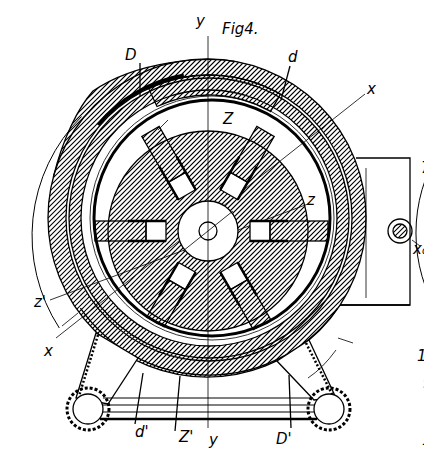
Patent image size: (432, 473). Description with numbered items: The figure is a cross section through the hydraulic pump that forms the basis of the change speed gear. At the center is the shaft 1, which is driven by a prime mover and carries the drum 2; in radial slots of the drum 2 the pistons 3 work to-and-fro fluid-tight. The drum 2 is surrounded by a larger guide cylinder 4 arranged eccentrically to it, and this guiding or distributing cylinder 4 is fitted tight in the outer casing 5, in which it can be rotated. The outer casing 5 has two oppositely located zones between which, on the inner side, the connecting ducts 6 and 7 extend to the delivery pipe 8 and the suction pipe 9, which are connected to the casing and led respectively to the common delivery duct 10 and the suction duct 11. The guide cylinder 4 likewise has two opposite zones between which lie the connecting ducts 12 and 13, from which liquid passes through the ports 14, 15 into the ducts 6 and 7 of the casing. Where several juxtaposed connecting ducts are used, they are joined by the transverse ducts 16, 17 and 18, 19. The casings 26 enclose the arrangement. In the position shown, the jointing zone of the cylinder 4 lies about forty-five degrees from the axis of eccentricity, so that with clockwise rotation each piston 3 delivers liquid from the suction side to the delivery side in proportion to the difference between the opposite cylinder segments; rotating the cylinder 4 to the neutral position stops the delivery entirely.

The shaft 1 is at (207, 215).
The drum 2 is at (272, 133).
The piston 3 is at (272, 120).
The guide cylinder 4 is at (322, 134).
The outer casing 5 is at (228, 72).
The connecting duct 6 is at (305, 95).
The connecting duct 7 is at (100, 107).
The delivery pipe 8 is at (305, 372).
The suction pipe 9 is at (97, 373).
The delivery duct 10 is at (338, 402).
The suction duct 11 is at (80, 405).
The connecting duct 12 is at (372, 302).
The connecting duct 13 is at (67, 152).
The port 14 is at (232, 370).
The port 15 is at (148, 92).
The transverse duct 16 is at (340, 335).
The transverse duct 17 is at (58, 305).
The transverse duct 18 is at (330, 345).
The transverse duct 19 is at (113, 125).
The casing 26 is at (375, 160).